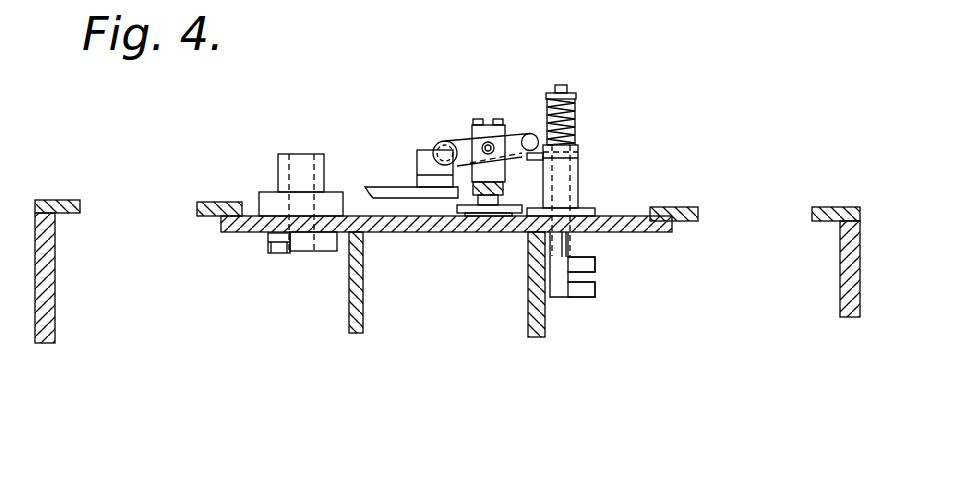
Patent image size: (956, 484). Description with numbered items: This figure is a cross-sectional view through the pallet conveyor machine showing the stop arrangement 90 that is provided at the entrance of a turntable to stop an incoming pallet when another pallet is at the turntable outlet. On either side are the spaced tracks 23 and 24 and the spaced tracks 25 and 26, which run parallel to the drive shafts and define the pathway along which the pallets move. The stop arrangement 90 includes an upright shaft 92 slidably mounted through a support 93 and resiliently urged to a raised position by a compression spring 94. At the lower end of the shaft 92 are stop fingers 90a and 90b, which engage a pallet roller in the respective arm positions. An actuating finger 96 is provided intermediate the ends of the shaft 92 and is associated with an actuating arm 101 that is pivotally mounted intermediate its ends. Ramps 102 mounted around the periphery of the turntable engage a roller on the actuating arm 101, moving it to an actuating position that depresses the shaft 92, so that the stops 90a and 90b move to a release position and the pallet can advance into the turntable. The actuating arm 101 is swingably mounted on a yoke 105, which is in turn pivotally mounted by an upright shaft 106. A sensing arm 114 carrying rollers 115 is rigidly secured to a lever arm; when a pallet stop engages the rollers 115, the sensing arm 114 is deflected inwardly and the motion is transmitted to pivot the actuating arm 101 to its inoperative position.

The track 23 is at (828, 207).
The track 24 is at (672, 207).
The track 25 is at (222, 201).
The track 26 is at (67, 200).
The stop arrangement 90 is at (603, 201).
The stop finger 90a is at (595, 293).
The stop finger 90b is at (595, 265).
The upright shaft 92 is at (568, 243).
The support 93 is at (580, 186).
The compression spring 94 is at (574, 112).
The actuating finger 96 is at (537, 160).
The actuating arm 101 is at (457, 140).
The ramp 102 is at (422, 150).
The yoke 105 is at (478, 140).
The upright shaft 106 is at (490, 198).
The sensing arm 114 is at (300, 251).
The roller 115 is at (268, 243).